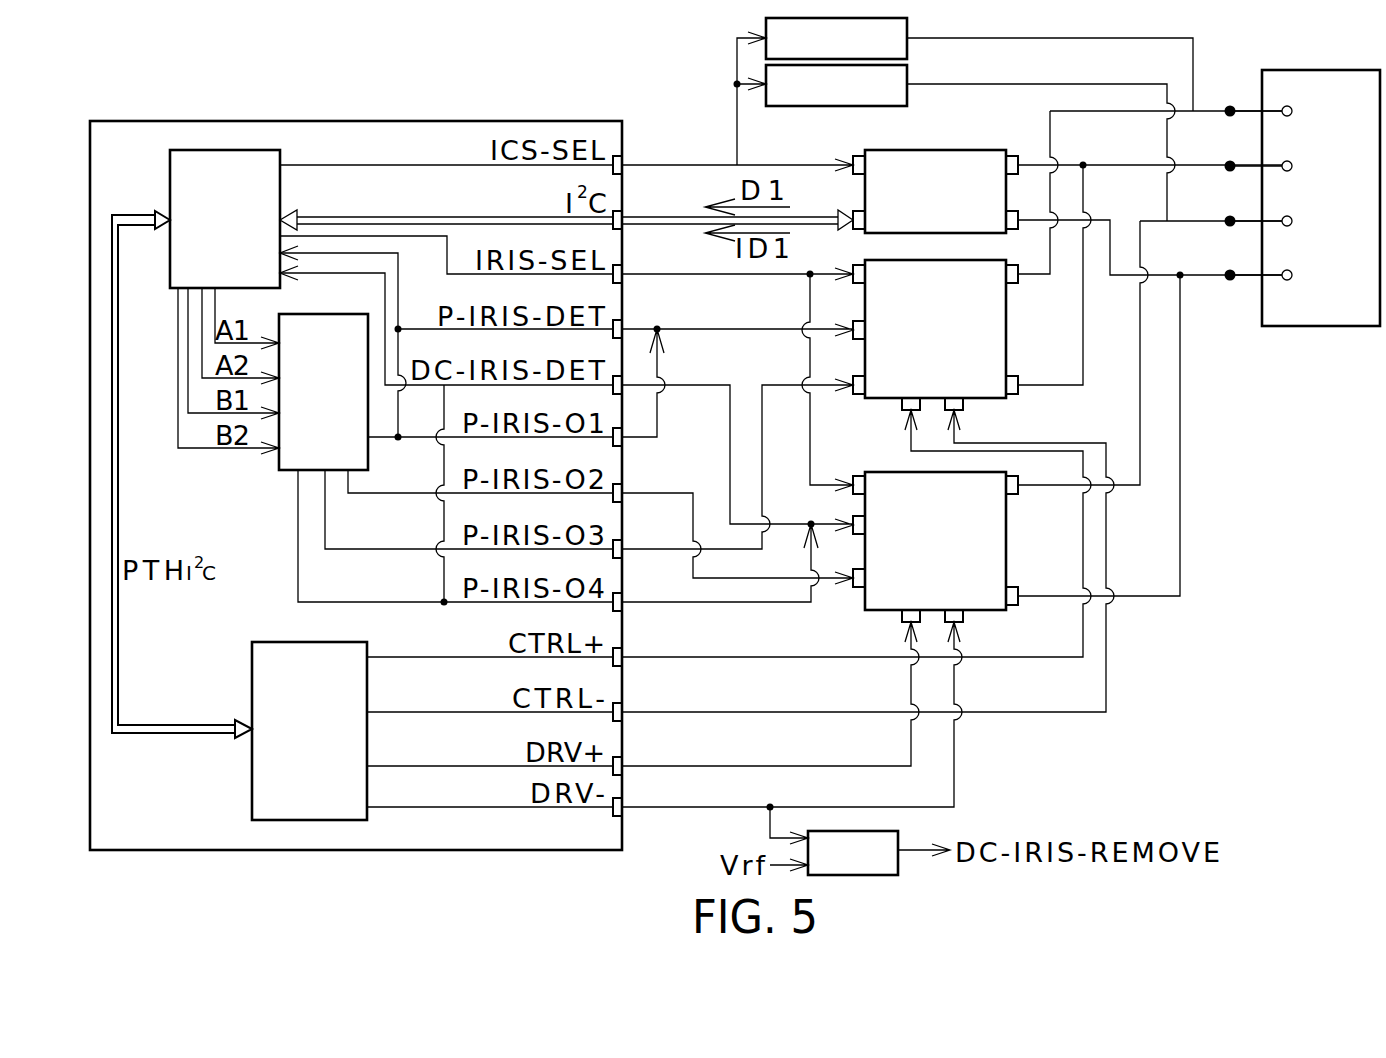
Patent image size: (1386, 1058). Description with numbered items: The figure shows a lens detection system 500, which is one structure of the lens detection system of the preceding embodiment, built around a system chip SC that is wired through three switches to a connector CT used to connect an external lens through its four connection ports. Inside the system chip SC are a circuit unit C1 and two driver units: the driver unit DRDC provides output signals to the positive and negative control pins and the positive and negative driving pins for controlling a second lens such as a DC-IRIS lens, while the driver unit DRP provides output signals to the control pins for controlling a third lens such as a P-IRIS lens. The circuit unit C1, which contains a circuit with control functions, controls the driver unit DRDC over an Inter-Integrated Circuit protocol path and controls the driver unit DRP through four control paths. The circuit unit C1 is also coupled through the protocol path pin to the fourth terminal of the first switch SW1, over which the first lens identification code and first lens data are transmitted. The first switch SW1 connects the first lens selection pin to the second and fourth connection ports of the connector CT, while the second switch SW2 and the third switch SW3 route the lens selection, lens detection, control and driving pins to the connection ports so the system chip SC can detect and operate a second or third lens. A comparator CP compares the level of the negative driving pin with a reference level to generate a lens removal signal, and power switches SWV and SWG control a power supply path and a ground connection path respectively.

The lens detection system 500 is at (1217, 688).
The system chip SC is at (338, 121).
The circuit unit C1 is at (225, 219).
The driver unit DRP is at (323, 392).
The driver unit DRDC is at (309, 731).
The first switch SW1 is at (935, 194).
The second switch SW2 is at (935, 335).
The third switch SW3 is at (935, 547).
The power switch SWV is at (836, 38).
The power switch SWG is at (836, 85).
The comparator CP is at (853, 853).
The connector CT is at (1324, 326).